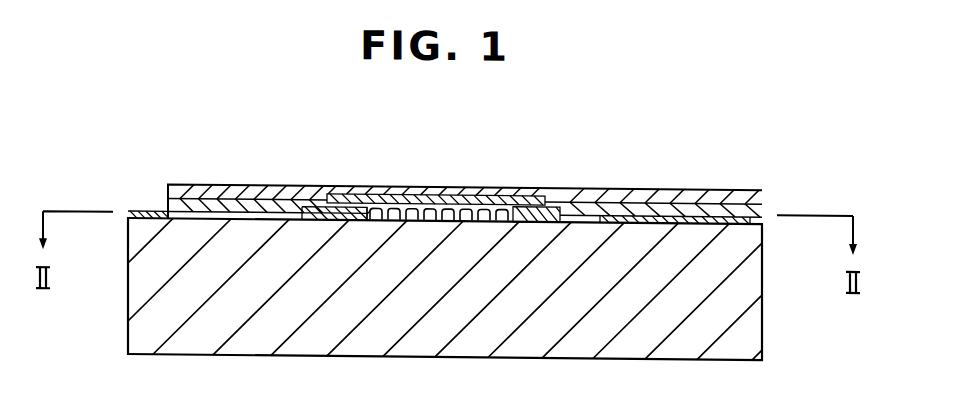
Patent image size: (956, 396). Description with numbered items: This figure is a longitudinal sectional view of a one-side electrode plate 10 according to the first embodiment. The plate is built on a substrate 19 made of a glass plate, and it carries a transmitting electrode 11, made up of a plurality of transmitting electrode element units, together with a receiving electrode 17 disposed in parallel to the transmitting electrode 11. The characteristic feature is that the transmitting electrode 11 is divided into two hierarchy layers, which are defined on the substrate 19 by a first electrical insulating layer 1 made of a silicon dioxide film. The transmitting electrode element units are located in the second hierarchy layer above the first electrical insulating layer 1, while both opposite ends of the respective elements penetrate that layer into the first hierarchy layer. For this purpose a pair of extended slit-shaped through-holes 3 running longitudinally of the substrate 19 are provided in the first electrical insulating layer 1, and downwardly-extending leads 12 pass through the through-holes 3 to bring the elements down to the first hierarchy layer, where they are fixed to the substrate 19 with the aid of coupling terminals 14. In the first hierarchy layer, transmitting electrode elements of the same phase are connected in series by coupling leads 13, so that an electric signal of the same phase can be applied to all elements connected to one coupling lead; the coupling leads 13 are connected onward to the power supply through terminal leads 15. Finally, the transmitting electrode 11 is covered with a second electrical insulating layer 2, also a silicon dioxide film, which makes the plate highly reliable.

The first electrical insulating layer 1 is at (209, 199).
The second electrical insulating layer 2 is at (241, 187).
The through-holes 3 is at (290, 190).
The one-side electrode plate 10 is at (716, 172).
The transmitting electrode 11 is at (452, 192).
The downwardly-extending leads 12 is at (372, 206).
The coupling leads 13 is at (495, 196).
The coupling terminals 14 is at (560, 196).
The terminal leads 15 is at (150, 210).
The receiving electrode 17 is at (655, 205).
The substrate 19 is at (755, 324).